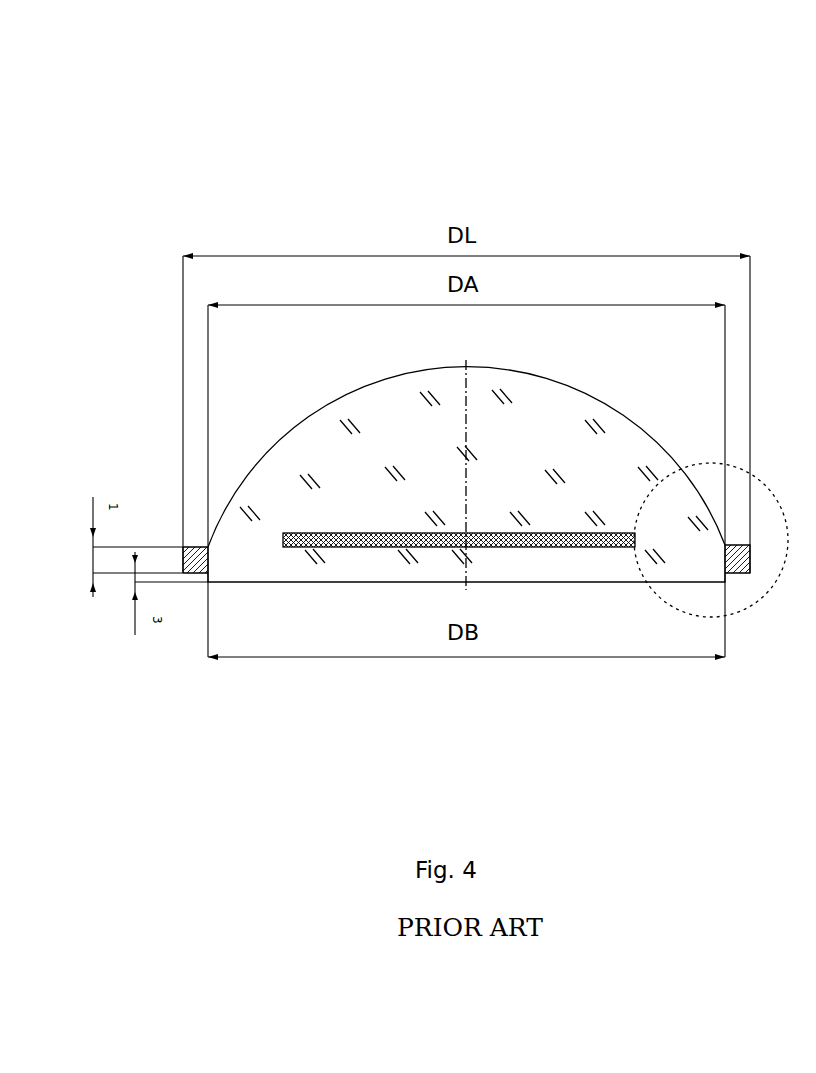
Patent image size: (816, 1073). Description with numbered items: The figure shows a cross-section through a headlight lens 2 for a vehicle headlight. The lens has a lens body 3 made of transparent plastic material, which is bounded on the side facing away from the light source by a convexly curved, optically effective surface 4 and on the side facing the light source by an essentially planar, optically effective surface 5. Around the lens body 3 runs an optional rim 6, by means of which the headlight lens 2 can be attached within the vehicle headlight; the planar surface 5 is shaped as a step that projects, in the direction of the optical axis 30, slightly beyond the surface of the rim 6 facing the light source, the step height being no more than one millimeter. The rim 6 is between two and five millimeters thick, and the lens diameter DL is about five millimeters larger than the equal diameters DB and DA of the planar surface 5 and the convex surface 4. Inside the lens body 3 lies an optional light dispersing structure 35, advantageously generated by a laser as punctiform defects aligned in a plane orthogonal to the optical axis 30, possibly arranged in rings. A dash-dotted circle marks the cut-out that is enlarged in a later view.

The headlight lens 2 is at (670, 132).
The lens body 3 is at (273, 502).
The convexly curved optically effective surface 4 is at (303, 425).
The essentially planar optically effective surface 5 is at (309, 560).
The rim 6 is at (198, 558).
The optical axis 30 is at (465, 486).
The light dispersing structure 35 is at (571, 540).